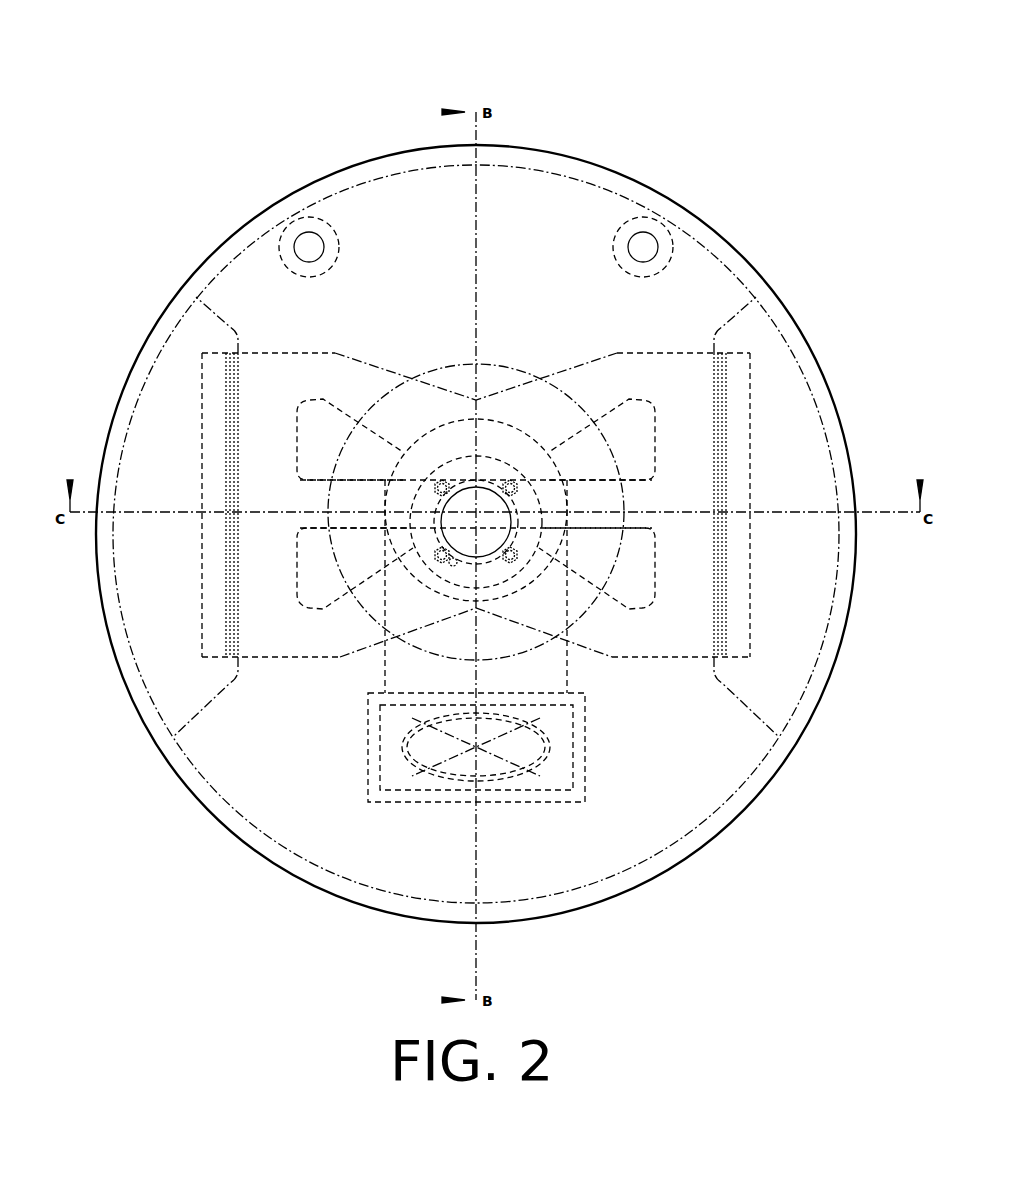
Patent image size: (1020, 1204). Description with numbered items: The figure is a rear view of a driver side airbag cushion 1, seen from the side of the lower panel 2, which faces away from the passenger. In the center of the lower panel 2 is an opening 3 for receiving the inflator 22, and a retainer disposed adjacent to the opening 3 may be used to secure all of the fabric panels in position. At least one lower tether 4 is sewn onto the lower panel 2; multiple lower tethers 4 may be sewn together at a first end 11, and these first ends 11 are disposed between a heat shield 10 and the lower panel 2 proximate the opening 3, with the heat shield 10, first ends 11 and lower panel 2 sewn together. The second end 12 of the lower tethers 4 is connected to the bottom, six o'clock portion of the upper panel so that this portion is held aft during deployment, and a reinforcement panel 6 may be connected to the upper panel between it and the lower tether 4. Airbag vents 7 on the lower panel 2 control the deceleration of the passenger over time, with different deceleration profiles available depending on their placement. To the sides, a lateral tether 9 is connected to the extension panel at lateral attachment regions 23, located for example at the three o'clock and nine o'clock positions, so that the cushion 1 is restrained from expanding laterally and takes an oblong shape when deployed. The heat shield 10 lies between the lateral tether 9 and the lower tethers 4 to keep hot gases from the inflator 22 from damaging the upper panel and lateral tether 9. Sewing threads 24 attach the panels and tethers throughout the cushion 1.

The airbag cushion 1 is at (155, 113).
The lower panel 2 is at (262, 213).
The opening 3 is at (479, 537).
The lower tether 4 is at (515, 563).
The reinforcement panel 6 is at (372, 800).
The airbag vents 7 is at (654, 243).
The lateral tether 9 is at (263, 615).
The heat shield 10 is at (553, 415).
The first end 11 is at (457, 440).
The second end 12 is at (545, 787).
The inflator 22 is at (532, 530).
The lateral attachment regions 23 is at (235, 508).
The sewing threads 24 is at (226, 580).